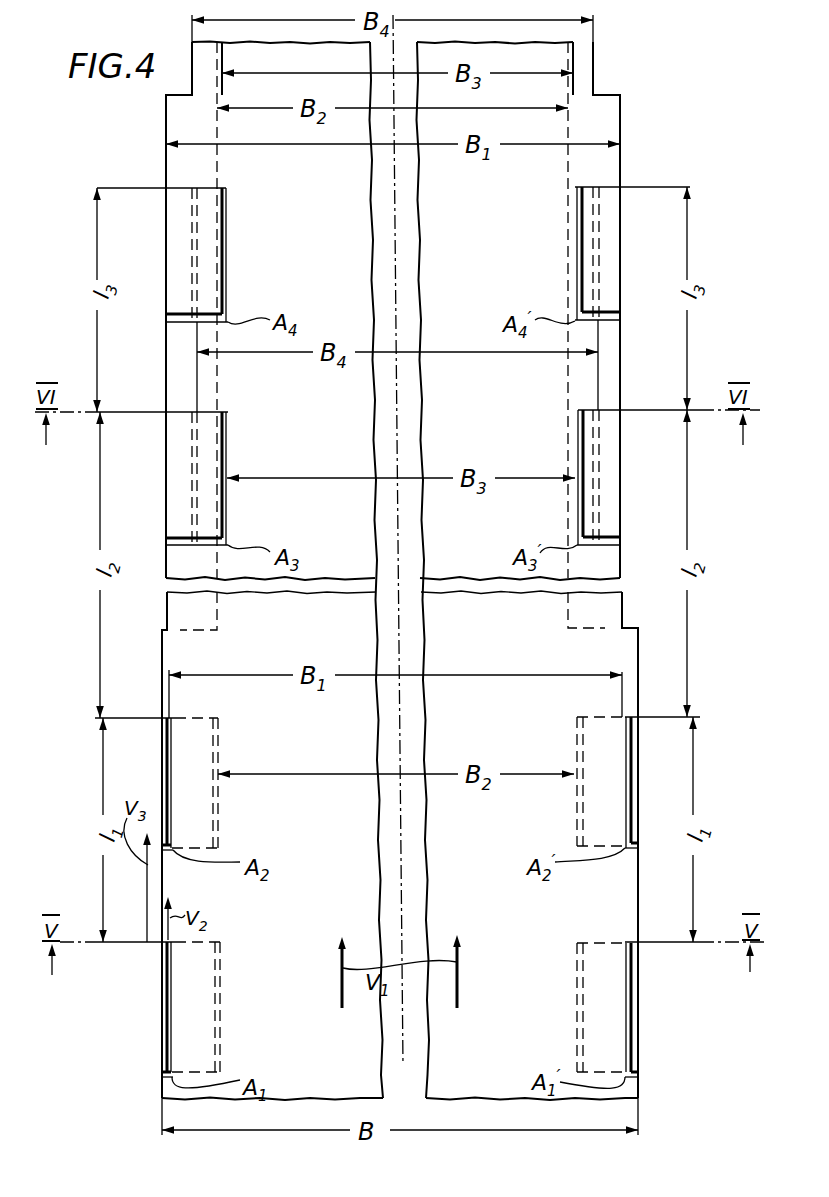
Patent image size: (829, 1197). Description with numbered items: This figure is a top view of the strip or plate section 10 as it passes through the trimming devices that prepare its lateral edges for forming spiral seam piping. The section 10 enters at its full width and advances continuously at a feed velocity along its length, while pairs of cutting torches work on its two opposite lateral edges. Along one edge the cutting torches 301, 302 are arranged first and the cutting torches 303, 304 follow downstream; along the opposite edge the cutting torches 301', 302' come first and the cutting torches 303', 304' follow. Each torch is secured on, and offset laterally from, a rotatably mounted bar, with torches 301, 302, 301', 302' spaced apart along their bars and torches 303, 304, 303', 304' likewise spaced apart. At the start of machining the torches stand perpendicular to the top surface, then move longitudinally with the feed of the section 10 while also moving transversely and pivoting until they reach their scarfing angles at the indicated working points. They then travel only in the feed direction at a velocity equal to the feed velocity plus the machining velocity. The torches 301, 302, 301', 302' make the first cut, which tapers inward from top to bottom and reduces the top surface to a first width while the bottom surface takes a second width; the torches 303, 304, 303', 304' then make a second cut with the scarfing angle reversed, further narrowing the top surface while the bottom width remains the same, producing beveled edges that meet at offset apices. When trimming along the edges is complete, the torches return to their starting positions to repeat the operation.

The section 10 is at (433, 1055).
The cutting torch 301 is at (157, 995).
The cutting torch 301' is at (646, 992).
The cutting torch 302 is at (156, 745).
The cutting torch 302' is at (638, 743).
The cutting torch 303 is at (201, 463).
The cutting torch 303' is at (606, 462).
The cutting torch 304 is at (203, 238).
The cutting torch 304' is at (584, 235).